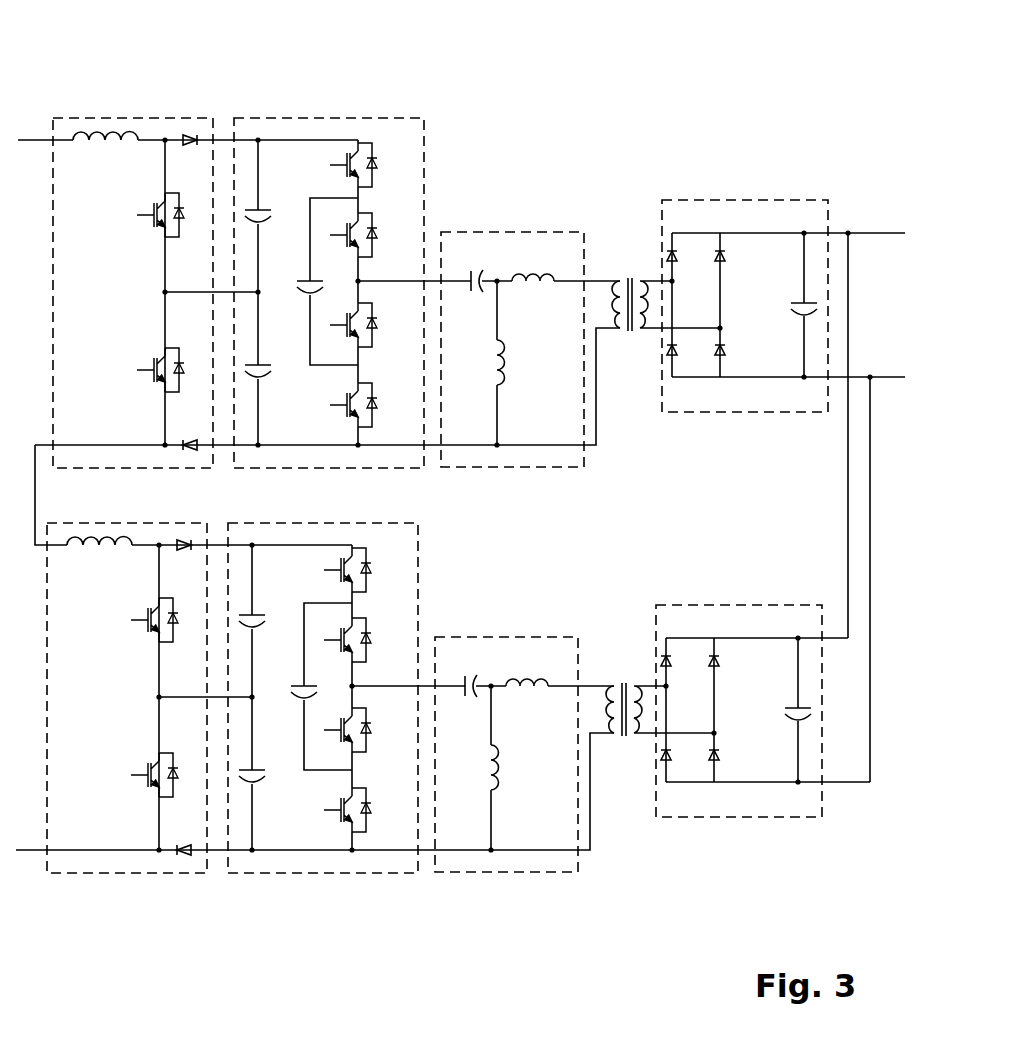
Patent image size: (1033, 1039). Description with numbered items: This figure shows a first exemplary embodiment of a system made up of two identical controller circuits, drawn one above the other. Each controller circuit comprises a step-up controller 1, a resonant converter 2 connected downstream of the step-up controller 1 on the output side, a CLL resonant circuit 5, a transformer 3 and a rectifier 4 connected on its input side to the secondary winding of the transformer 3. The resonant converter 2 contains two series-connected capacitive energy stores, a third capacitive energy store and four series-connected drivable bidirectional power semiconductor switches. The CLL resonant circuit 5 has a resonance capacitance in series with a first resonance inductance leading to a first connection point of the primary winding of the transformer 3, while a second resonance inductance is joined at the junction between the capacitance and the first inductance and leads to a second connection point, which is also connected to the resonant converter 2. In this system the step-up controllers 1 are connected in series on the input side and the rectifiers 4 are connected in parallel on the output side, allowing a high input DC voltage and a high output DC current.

The step-up controller 1 is at (108, 118).
The resonant converter 2 is at (307, 118).
The transformer 3 is at (624, 250).
The rectifier 4 is at (740, 200).
The CLL resonant circuit 5 is at (528, 232).